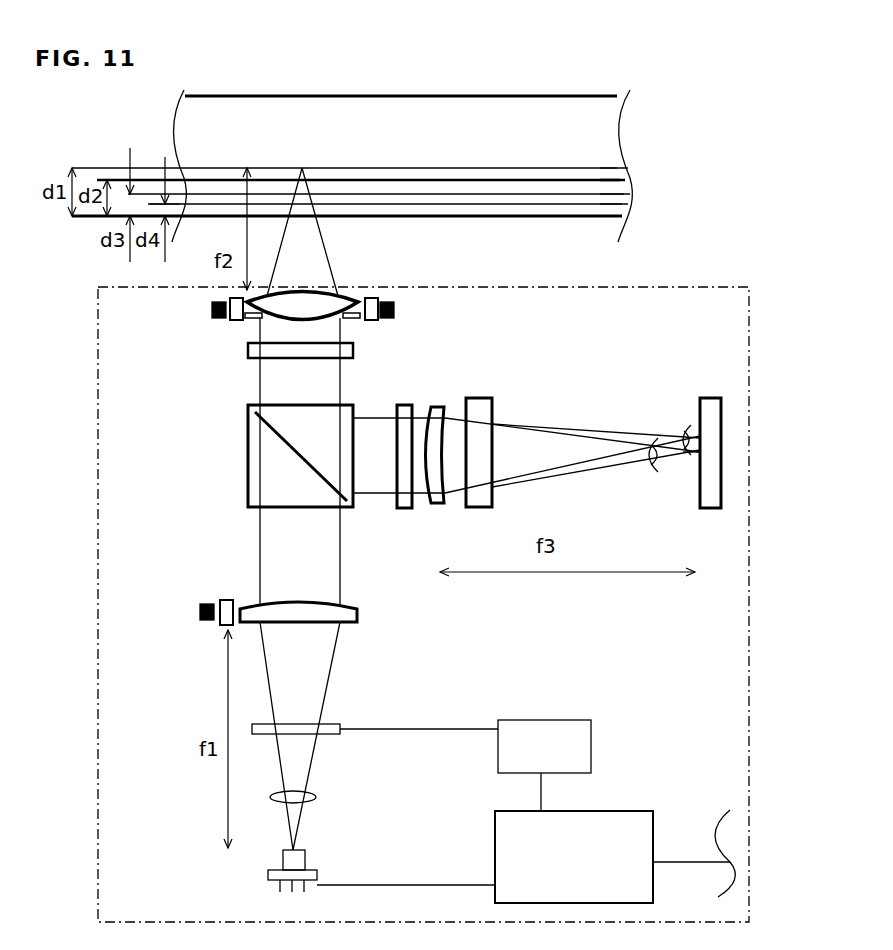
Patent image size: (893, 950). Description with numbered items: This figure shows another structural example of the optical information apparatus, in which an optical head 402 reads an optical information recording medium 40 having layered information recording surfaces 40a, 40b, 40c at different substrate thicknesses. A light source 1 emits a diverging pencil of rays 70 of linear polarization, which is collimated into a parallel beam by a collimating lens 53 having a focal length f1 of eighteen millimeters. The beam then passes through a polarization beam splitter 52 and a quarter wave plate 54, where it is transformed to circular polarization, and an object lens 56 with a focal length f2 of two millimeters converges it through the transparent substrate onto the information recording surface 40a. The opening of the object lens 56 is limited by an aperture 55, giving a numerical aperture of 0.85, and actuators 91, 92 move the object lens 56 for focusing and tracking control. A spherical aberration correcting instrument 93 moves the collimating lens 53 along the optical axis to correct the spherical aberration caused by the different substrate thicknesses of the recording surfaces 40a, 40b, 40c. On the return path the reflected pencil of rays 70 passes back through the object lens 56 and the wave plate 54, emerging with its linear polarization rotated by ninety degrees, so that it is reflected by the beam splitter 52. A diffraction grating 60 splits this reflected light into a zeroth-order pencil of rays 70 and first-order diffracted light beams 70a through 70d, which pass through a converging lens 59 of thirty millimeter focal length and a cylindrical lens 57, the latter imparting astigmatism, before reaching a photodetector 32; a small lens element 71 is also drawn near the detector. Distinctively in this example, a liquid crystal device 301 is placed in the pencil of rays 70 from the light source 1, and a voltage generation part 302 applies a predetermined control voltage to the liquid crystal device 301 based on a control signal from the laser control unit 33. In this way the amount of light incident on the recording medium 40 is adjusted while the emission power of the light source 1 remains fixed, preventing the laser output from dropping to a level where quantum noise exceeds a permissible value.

The light source 1 is at (305, 855).
The photodetector 32 is at (707, 398).
The laser control unit 33 is at (605, 810).
The optical information recording medium 40 is at (547, 218).
The information recording surface 40a is at (618, 168).
The information recording surface 40b is at (613, 180).
The information recording surface 40c is at (630, 194).
The polarization beam splitter 52 is at (240, 468).
The collimating lens 53 is at (247, 603).
The wave plate 54 is at (248, 349).
The aperture 55 is at (248, 318).
The object lens 56 is at (357, 300).
The cylindrical lens 57 is at (485, 395).
The converging lens 59 is at (438, 405).
The diffraction grating 60 is at (403, 400).
The pencil of rays 70 is at (645, 462).
The first-order diffracted light beam 70a is at (682, 417).
The first-order diffracted light beam 70d is at (635, 408).
The lens element 71 is at (683, 453).
The actuator 91 is at (212, 307).
The actuator 92 is at (394, 305).
The spherical aberration correcting instrument 93 is at (200, 618).
The liquid crystal device 301 is at (330, 724).
The voltage generation part 302 is at (590, 720).
The optical head 402 is at (676, 280).